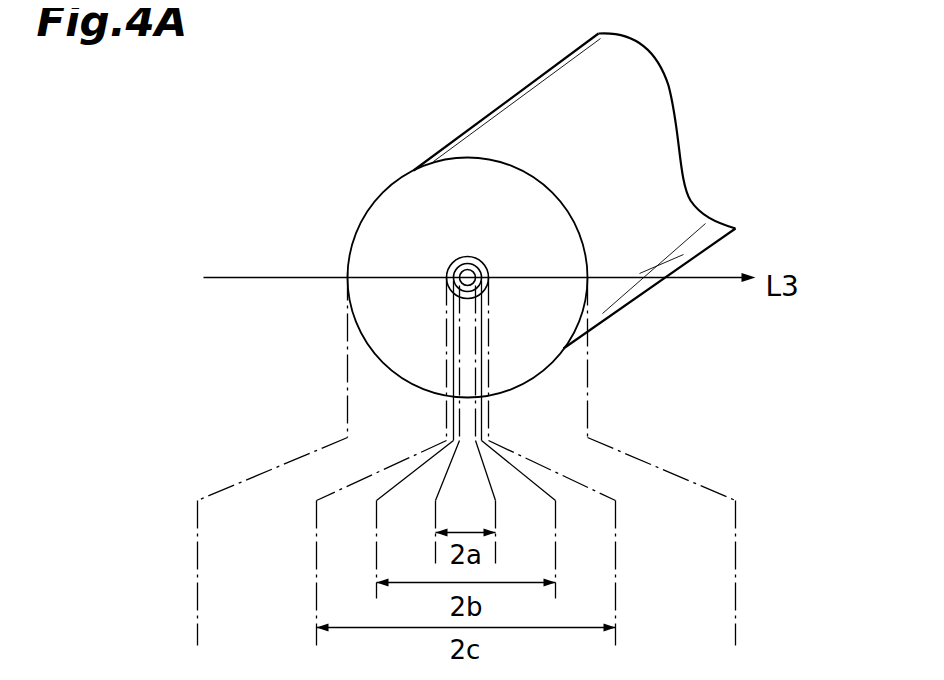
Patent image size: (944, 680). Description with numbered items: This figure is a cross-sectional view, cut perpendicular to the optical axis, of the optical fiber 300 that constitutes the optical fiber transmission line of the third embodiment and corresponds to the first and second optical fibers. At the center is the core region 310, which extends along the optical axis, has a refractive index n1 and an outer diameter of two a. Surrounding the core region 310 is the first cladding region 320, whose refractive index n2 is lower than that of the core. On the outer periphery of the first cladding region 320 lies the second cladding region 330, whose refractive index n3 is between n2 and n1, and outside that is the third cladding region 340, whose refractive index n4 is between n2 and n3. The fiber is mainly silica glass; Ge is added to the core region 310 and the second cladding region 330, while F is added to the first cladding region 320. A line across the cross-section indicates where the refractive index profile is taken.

The optical fiber 300 is at (464, 103).
The core region 310 is at (462, 270).
The first cladding region 320 is at (458, 265).
The second cladding region 330 is at (468, 256).
The third cladding region 340 is at (428, 178).